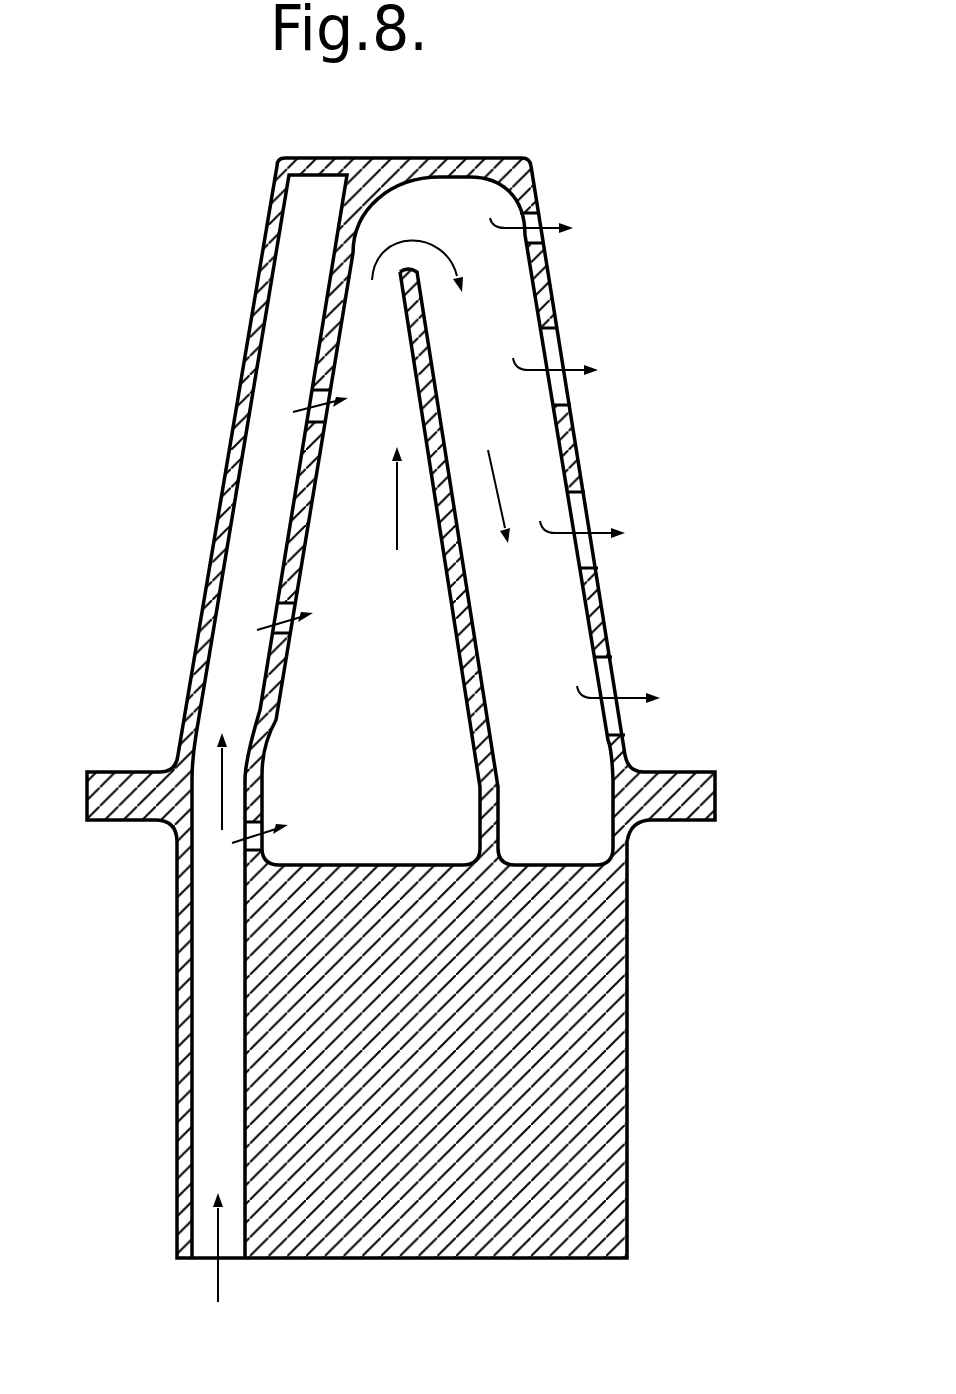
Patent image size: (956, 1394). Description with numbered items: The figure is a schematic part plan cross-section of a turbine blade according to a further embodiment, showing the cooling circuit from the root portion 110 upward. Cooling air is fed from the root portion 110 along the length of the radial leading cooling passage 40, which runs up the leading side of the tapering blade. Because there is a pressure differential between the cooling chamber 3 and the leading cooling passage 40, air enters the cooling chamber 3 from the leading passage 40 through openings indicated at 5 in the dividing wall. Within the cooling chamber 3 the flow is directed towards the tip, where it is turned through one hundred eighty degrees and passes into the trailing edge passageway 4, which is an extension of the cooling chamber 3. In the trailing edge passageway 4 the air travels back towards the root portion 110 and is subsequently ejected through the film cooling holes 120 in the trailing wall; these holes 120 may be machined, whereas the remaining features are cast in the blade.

The root portion 110 is at (177, 903).
The radial leading cooling passage 40 is at (282, 524).
The cooling chamber 3 is at (379, 646).
The trailing edge passageway 4 is at (509, 644).
The impingement holes in partition wall 5 is at (318, 397).
The film cooling holes 120 is at (552, 338).